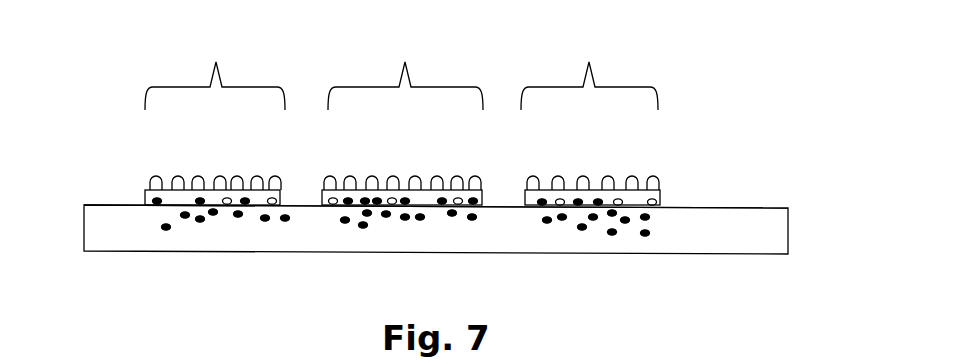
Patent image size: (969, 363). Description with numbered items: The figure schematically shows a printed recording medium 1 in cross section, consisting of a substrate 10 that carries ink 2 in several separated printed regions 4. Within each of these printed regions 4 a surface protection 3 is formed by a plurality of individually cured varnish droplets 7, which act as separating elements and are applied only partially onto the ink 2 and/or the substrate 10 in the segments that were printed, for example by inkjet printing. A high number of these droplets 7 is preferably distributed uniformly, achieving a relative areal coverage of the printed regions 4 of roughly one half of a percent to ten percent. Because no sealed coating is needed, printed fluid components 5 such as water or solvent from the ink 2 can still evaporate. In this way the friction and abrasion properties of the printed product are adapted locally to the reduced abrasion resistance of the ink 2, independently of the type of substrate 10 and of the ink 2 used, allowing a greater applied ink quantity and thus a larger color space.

The recording medium 1 is at (801, 231).
The substrate 10 is at (715, 238).
The ink 2 is at (218, 200).
The surface protection 3 is at (160, 177).
The printed regions 4 is at (401, 60).
The printed fluid components 5 is at (445, 200).
The varnish droplets 7 is at (637, 195).